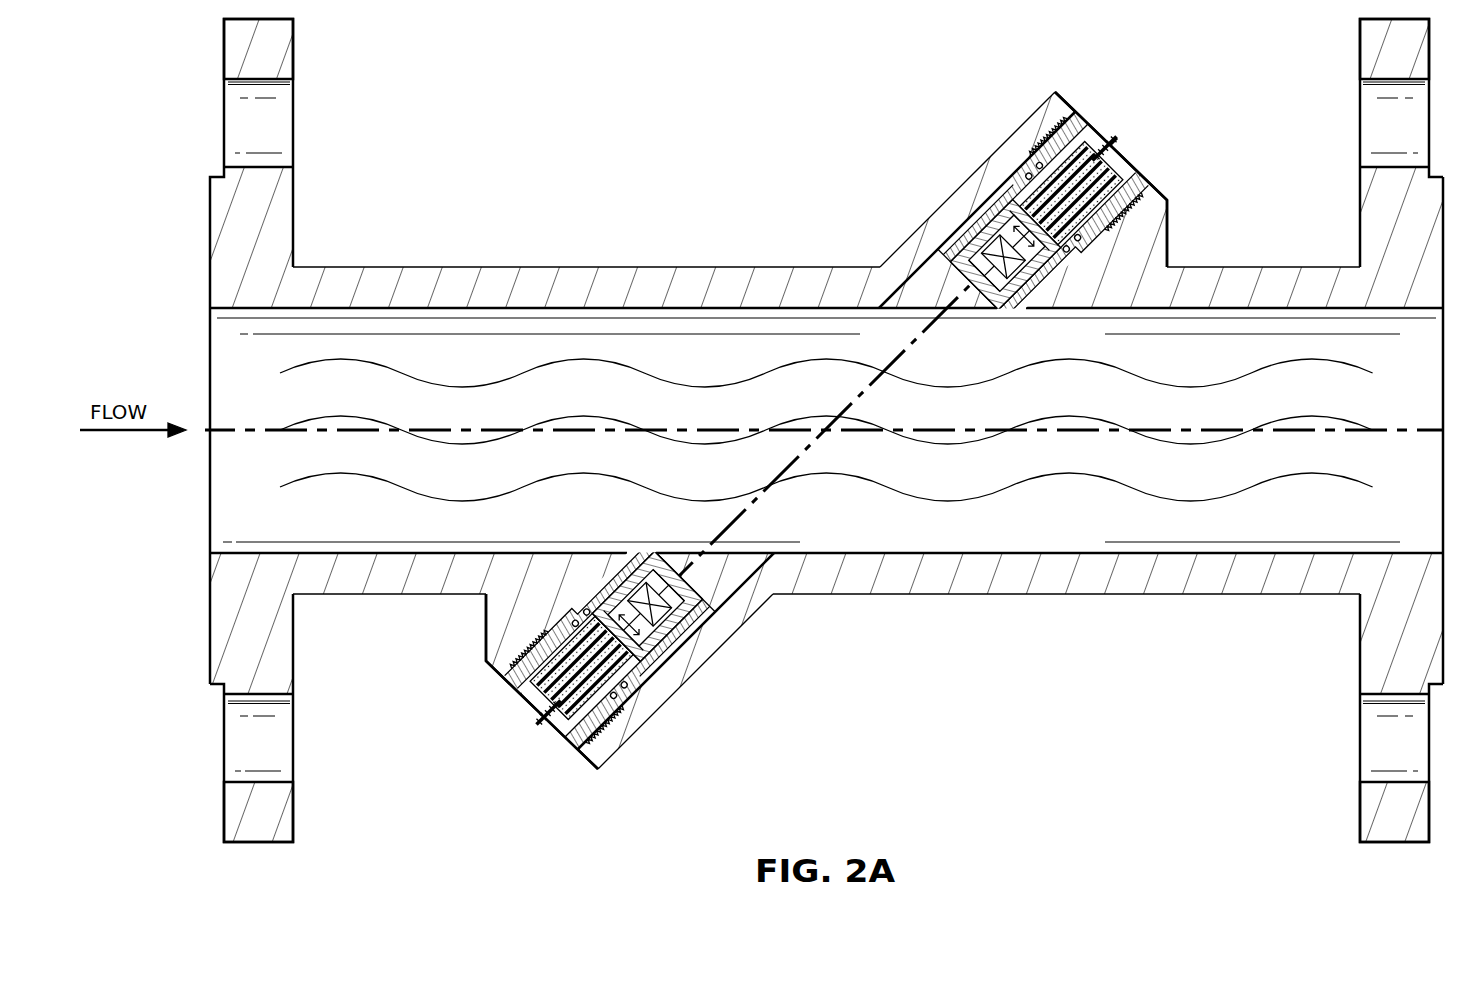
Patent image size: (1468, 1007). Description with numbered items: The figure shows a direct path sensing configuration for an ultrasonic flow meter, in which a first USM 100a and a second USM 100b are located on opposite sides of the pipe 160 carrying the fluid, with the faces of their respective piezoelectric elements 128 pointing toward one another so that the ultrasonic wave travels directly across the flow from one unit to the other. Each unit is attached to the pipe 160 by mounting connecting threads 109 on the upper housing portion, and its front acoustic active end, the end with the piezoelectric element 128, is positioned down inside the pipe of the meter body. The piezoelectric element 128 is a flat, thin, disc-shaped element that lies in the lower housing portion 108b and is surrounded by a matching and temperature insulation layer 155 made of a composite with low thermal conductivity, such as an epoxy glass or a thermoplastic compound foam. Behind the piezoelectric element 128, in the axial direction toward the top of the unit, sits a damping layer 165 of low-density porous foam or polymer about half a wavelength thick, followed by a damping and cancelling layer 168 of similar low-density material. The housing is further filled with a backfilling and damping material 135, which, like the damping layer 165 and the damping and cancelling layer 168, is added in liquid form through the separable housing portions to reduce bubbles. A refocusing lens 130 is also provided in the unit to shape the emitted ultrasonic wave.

The first USM 100a is at (508, 707).
The second USM 100b is at (1008, 165).
The lower housing portion 108b is at (632, 543).
The mounting connecting threads 109 is at (1048, 130).
The piezoelectric element 128 is at (795, 655).
The refocusing lens 130 is at (1007, 295).
The backfilling and damping material 135 is at (1113, 160).
The matching and temperature insulation layer 155 is at (957, 280).
The pipe 160 is at (472, 280).
The damping layer 165 is at (985, 298).
The damping and cancelling layer 168 is at (1073, 257).